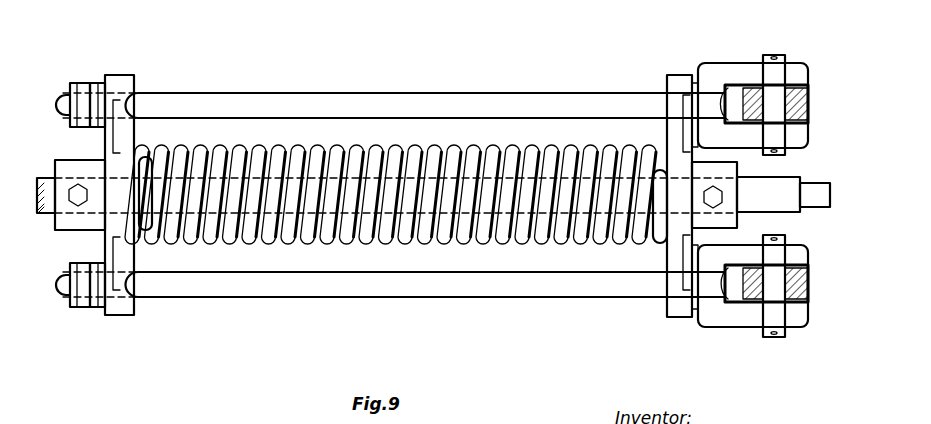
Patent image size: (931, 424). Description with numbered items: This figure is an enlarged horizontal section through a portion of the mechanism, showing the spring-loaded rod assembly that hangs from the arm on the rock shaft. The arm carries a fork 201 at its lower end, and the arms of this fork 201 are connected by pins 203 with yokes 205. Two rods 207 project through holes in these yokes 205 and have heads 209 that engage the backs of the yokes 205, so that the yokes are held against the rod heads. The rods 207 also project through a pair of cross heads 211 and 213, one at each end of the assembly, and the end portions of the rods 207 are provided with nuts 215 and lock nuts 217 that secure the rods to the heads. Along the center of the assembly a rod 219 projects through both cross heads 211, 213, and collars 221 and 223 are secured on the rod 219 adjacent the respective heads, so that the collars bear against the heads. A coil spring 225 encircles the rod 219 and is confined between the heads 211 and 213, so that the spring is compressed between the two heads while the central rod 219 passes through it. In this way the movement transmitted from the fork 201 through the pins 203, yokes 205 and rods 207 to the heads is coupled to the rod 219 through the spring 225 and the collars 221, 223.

The fork 201 is at (800, 78).
The pins 203 is at (774, 55).
The yokes 205 is at (735, 68).
The rods 207 is at (412, 93).
The heads 209 is at (728, 97).
The head 211 is at (672, 73).
The head 213 is at (122, 76).
The nuts 215 is at (97, 84).
The lock nuts 217 is at (78, 84).
The rod 219 is at (51, 210).
The collar 221 is at (75, 164).
The collar 223 is at (735, 164).
The coil spring 225 is at (490, 242).